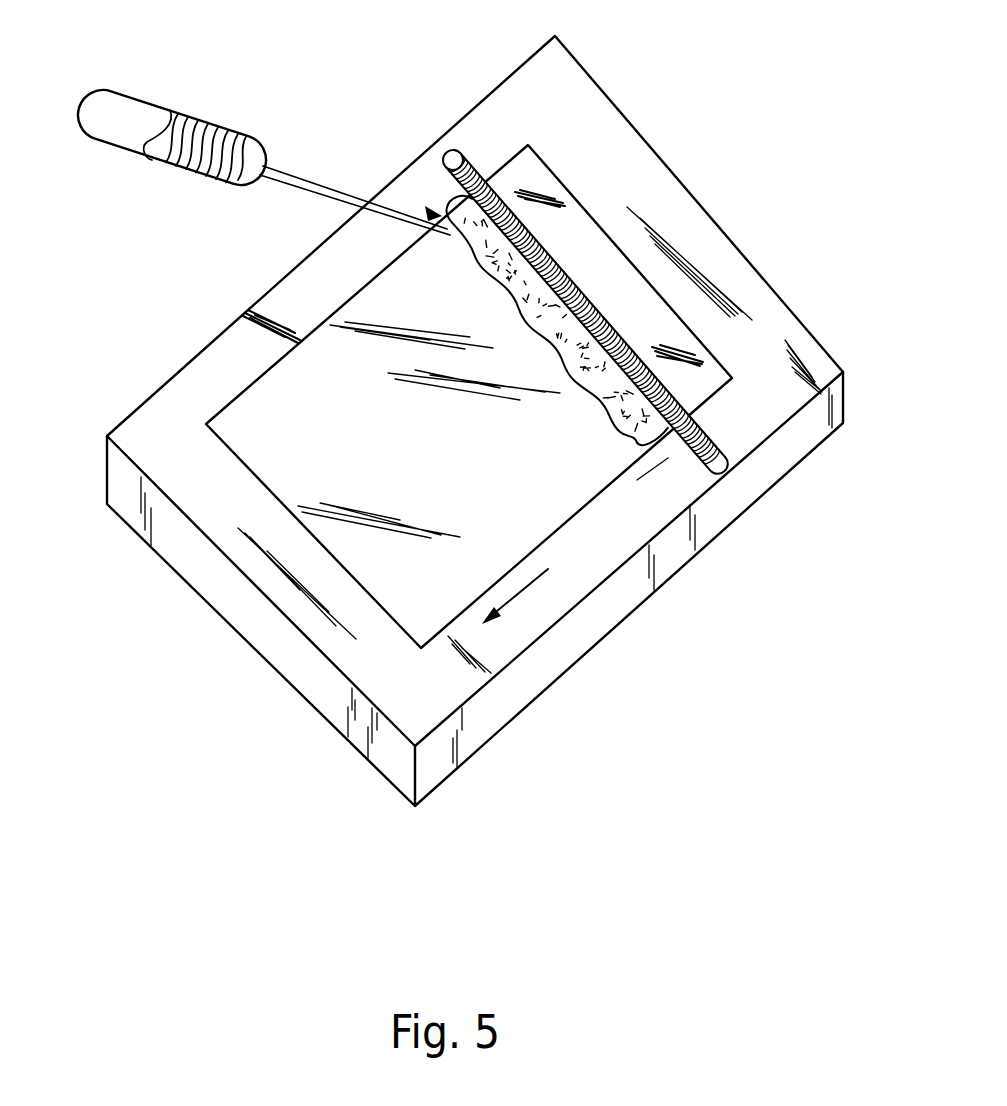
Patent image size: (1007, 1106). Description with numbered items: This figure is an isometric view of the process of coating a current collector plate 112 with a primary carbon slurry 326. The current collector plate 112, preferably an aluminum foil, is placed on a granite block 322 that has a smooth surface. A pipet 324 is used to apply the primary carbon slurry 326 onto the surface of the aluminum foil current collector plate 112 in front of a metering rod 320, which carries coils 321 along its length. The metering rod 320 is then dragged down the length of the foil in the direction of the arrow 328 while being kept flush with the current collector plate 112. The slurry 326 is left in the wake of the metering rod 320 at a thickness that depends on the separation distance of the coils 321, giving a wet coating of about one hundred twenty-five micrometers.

The current collector plate 112 is at (287, 392).
The metering rod 320 is at (453, 152).
The coils 321 is at (562, 212).
The granite block 322 is at (753, 302).
The pipet 324 is at (107, 102).
The primary carbon slurry 326 is at (200, 118).
The arrow 328 is at (548, 569).